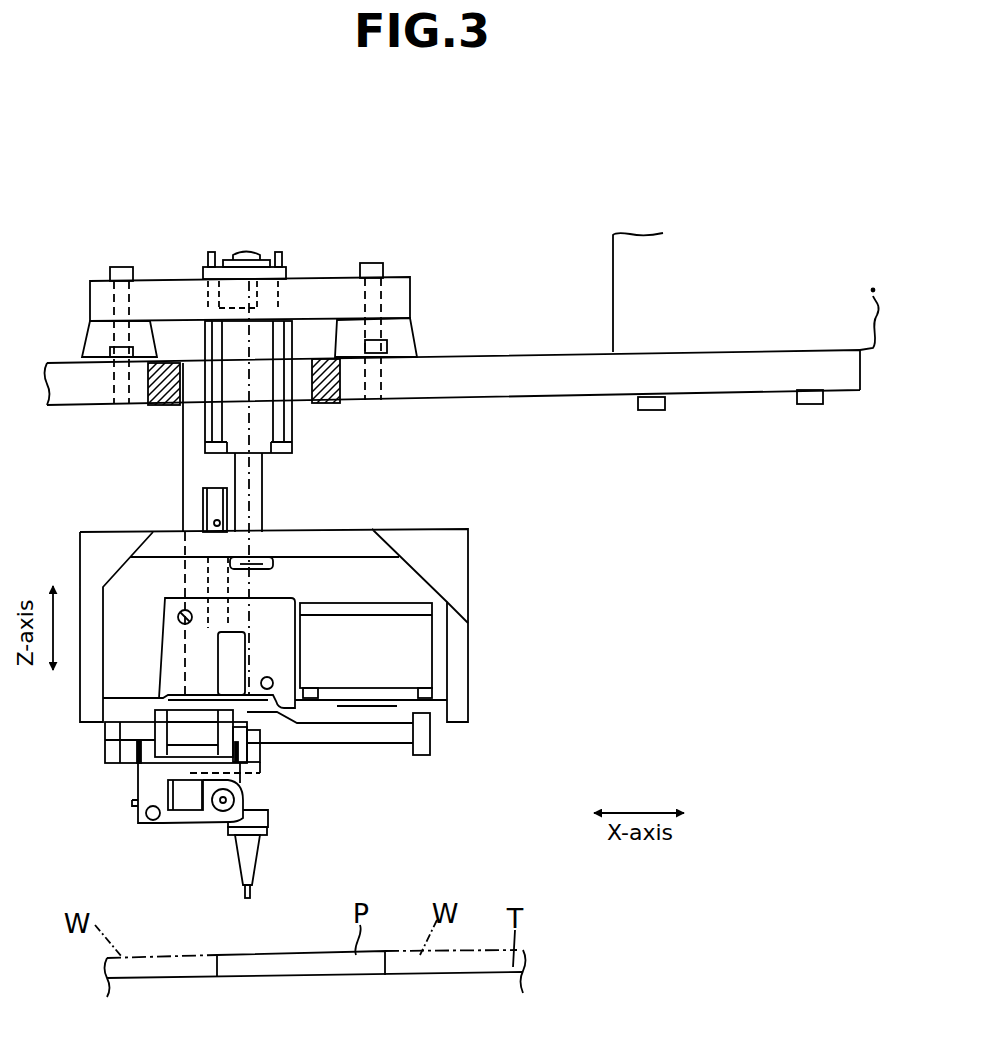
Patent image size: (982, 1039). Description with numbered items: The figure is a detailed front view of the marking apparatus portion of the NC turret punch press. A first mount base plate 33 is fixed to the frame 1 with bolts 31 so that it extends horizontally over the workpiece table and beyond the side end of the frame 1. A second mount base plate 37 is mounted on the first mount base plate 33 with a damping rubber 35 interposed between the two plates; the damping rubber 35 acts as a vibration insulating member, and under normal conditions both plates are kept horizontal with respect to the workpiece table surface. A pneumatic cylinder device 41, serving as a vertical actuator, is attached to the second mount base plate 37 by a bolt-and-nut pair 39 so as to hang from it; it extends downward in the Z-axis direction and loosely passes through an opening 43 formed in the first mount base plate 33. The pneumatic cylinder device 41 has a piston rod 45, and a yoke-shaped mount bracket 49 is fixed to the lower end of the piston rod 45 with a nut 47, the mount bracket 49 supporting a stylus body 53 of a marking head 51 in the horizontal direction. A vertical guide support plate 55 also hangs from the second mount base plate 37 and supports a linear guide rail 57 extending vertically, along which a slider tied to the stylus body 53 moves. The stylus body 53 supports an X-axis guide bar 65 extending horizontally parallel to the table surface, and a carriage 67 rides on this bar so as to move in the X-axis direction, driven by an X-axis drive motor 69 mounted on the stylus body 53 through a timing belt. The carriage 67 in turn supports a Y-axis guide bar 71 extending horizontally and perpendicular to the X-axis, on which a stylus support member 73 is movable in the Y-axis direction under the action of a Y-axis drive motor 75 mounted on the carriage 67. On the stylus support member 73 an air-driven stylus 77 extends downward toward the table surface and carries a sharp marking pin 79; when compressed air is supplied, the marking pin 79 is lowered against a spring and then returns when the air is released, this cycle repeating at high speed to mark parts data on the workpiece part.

The frame 1 is at (636, 269).
The bolts 31 is at (656, 406).
The first mount base plate 33 is at (605, 380).
The damping rubber 35 is at (95, 347).
The second mount base plate 37 is at (400, 298).
The bolt-and-nut pair 39 is at (212, 241).
The pneumatic cylinder device 41 is at (258, 333).
The opening 43 is at (306, 388).
The piston rod 45 is at (262, 476).
The nut 47 is at (274, 563).
The mount bracket 49 is at (356, 541).
The marking head 51 is at (408, 597).
The stylus body 53 is at (398, 712).
The vertical guide support plate 55 is at (183, 450).
The linear guide rail 57 is at (203, 500).
The X-axis guide bar 65 is at (387, 738).
The carriage 67 is at (250, 733).
The X-axis drive motor 69 is at (415, 643).
The Y-axis guide bar 71 is at (163, 815).
The stylus support member 73 is at (262, 815).
The Y-axis drive motor 75 is at (183, 735).
The stylus 77 is at (260, 850).
The marking pin 79 is at (248, 898).